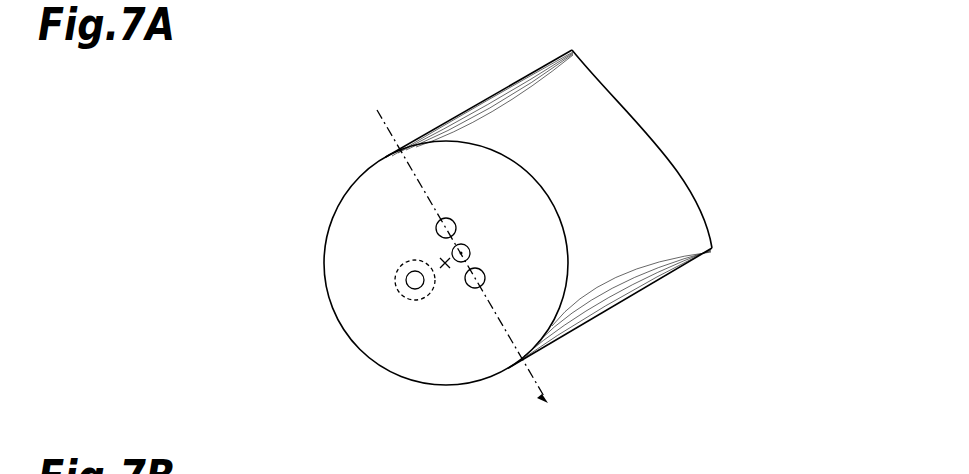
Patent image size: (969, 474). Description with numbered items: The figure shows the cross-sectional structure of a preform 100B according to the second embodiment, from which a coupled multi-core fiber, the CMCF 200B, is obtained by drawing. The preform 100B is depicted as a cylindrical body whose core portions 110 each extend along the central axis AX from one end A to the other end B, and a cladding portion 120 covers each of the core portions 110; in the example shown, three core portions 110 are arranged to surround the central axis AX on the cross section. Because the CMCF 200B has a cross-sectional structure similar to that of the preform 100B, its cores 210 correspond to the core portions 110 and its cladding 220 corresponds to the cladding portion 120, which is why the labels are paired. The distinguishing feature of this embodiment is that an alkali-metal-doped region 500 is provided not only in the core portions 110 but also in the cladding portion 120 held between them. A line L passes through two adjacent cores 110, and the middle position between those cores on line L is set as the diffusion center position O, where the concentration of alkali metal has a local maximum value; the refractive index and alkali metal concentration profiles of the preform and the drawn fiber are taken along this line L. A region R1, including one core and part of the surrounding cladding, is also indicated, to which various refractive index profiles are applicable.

The preform 100B is at (557, 205).
The CMCF 200B is at (632, 209).
The cladding portion 120 is at (370, 198).
The cladding 220 is at (415, 260).
The core portions 110 is at (450, 219).
The cores 210 is at (496, 218).
The alkali-metal-doped region 500 is at (468, 248).
The diffusion center position O is at (467, 248).
The region R1 is at (397, 272).
The central axis AX is at (445, 268).
The line L is at (474, 265).
The one end A is at (423, 171).
The other end B is at (613, 98).